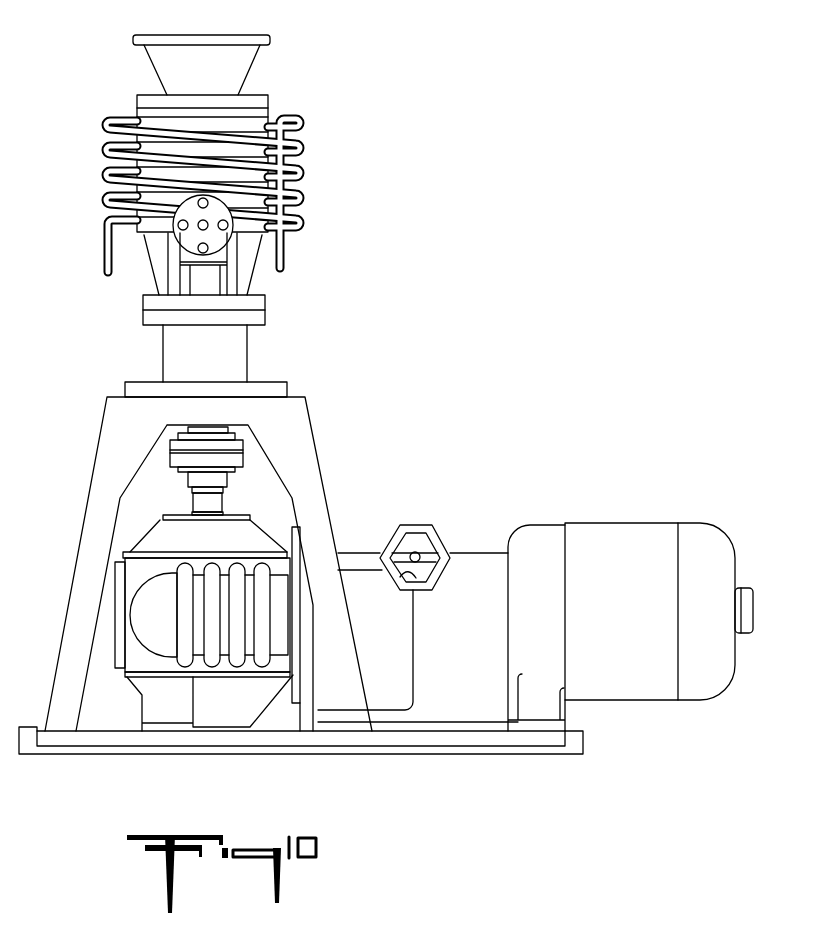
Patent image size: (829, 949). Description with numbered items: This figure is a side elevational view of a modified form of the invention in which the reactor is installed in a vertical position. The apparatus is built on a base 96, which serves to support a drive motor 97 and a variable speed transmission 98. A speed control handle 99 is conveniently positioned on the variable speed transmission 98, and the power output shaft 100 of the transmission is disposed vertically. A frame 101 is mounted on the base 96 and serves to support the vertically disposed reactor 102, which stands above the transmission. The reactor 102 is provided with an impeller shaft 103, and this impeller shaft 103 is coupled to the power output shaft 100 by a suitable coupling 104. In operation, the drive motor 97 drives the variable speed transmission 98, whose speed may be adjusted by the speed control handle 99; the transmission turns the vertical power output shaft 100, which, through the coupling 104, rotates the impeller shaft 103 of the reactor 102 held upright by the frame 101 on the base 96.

The base 96 is at (460, 754).
The drive motor 97 is at (657, 523).
The variable speed transmission 98 is at (480, 553).
The speed control handle 99 is at (423, 525).
The power output shaft 100 is at (222, 496).
The frame 101 is at (317, 442).
The reactor 102 is at (273, 104).
The impeller shaft 103 is at (227, 425).
The coupling 104 is at (243, 457).